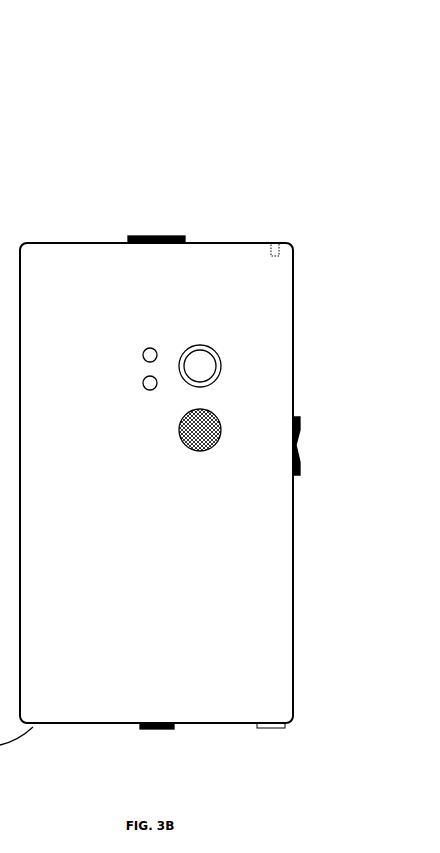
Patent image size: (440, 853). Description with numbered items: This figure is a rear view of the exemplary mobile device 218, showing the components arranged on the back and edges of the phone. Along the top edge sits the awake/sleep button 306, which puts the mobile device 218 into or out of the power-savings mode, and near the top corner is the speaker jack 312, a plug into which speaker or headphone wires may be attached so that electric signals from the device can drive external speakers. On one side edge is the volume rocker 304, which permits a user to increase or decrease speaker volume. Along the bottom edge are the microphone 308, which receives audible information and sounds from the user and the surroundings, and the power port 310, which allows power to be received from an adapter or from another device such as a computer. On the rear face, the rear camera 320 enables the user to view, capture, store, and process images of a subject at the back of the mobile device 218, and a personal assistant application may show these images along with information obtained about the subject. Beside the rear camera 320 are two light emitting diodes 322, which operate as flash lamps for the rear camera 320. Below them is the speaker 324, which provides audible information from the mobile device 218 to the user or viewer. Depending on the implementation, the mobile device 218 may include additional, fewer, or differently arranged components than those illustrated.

The mobile device 218 is at (150, 70).
The volume rocker 304 is at (300, 425).
The awake/sleep button 306 is at (157, 236).
The microphone 308 is at (155, 730).
The power port 310 is at (264, 730).
The speaker jack 312 is at (272, 243).
The rear camera 320 is at (220, 357).
The light emitting diodes 322 is at (142, 383).
The speaker 324 is at (200, 451).